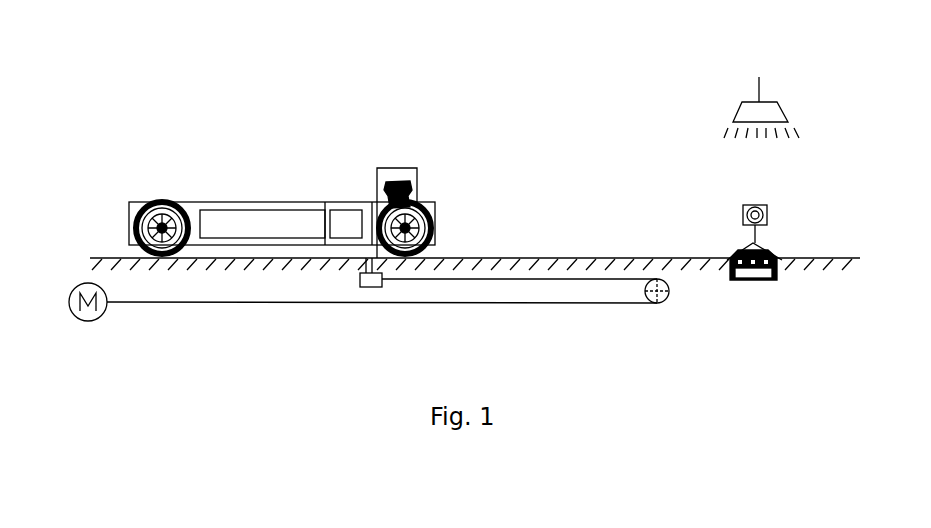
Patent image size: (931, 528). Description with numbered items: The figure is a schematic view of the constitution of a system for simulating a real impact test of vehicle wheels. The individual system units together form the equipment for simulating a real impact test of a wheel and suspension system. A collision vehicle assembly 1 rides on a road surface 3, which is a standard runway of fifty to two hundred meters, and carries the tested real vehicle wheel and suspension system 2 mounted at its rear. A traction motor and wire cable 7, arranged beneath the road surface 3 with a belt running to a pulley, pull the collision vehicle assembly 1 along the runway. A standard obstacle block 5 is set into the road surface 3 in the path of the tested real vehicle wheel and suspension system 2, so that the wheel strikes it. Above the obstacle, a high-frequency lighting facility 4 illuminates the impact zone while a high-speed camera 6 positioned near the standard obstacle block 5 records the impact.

The collision vehicle assembly 1 is at (190, 205).
The tested real vehicle wheel and suspension system 2 is at (390, 190).
The road surface 3 is at (568, 257).
The high-frequency lighting facility 4 is at (740, 112).
The standard obstacle block 5 is at (738, 252).
The high-speed camera 6 is at (767, 205).
The traction motor and wire cable 7 is at (75, 311).